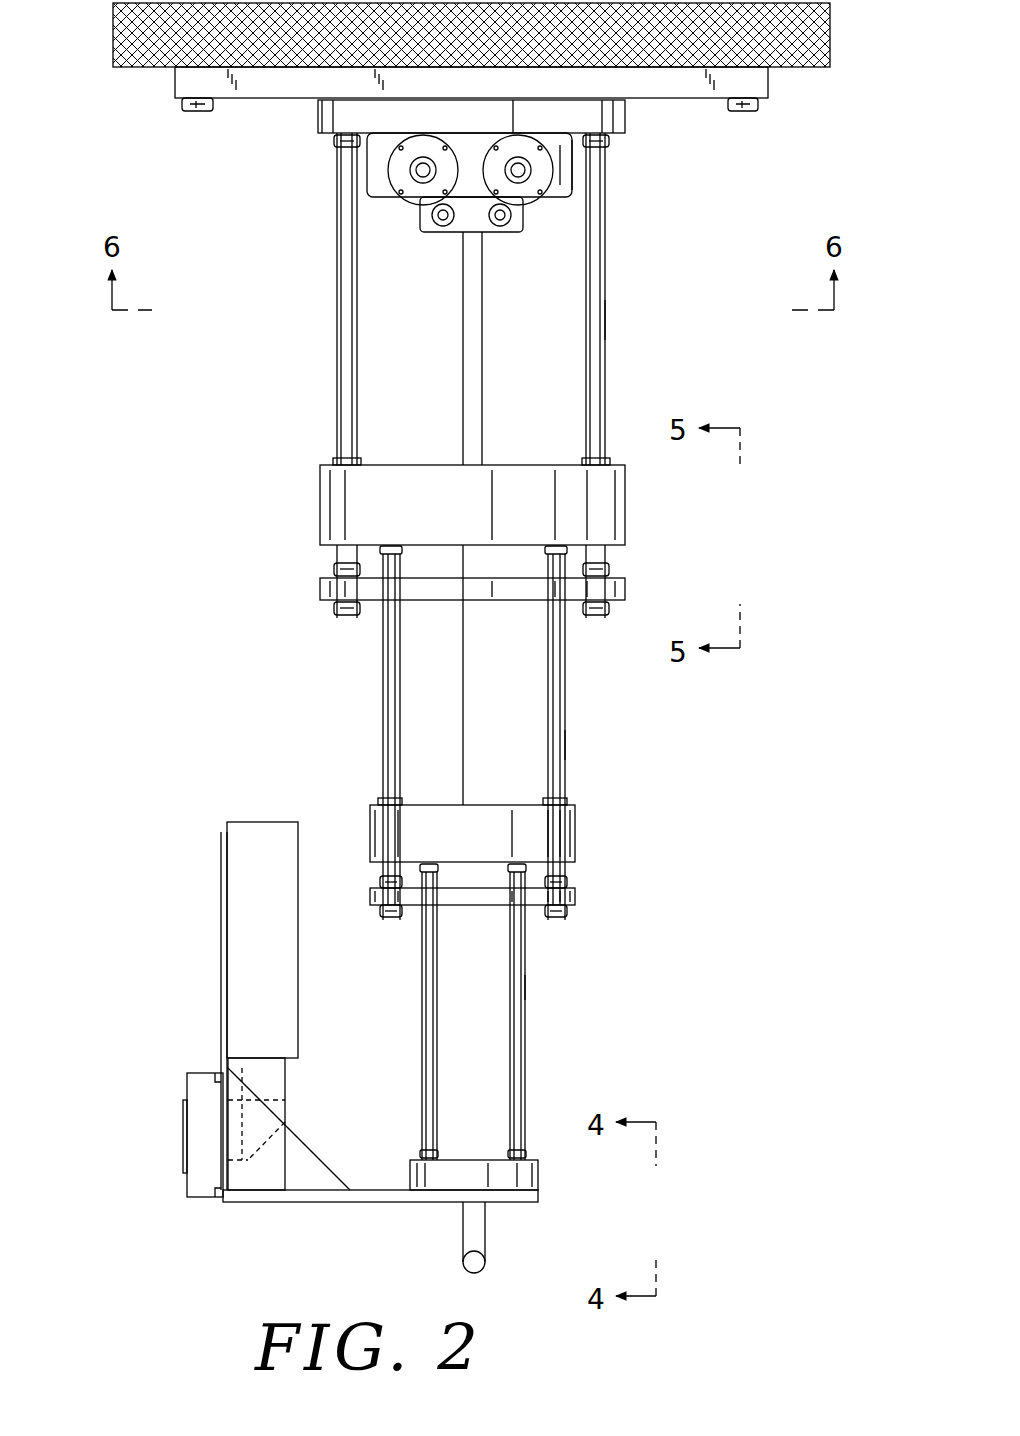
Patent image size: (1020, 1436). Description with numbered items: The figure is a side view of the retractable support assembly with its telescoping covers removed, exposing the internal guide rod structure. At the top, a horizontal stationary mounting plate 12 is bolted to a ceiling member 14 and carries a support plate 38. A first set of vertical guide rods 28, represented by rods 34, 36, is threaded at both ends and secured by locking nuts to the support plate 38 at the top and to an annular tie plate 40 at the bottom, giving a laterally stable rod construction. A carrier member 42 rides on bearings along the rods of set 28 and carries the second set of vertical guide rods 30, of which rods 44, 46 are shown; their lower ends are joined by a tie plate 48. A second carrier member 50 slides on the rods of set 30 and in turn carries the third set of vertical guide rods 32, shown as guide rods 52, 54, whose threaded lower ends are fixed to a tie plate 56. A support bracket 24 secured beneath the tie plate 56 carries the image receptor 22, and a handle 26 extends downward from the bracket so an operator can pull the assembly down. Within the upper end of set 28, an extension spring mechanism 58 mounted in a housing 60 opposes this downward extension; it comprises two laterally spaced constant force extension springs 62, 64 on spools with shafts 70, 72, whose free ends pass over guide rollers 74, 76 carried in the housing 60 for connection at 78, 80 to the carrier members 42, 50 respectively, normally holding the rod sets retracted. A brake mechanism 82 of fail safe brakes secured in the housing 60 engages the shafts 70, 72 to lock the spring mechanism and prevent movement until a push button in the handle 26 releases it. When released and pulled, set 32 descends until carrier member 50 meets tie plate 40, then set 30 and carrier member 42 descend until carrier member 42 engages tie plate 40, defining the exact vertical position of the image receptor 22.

The mounting plate 12 is at (768, 88).
The ceiling member 14 is at (831, 33).
The image receptor 22 is at (218, 934).
The support bracket 24 is at (322, 1203).
The handle 26 is at (492, 1263).
The first set of vertical guide rods 28 is at (608, 326).
The second set of vertical guide rods 30 is at (568, 742).
The third set of vertical guide rods 32 is at (528, 990).
The vertical guide rod 34 is at (606, 378).
The vertical guide rod 36 is at (358, 376).
The support plate 38 is at (625, 116).
The tie plate 40 is at (625, 594).
The carrier member 42 is at (625, 525).
The vertical guide rod 44 is at (565, 700).
The vertical guide rod 46 is at (383, 700).
The tie plate 48 is at (576, 895).
The carrier member 50 is at (576, 832).
The guide rod 52 is at (526, 1046).
The guide rod 54 is at (422, 1040).
The tie plate 56 is at (538, 1182).
The extension spring mechanism 58 is at (532, 262).
The housing 60 is at (572, 195).
The constant force extension spring 62 is at (548, 170).
The constant force extension spring 64 is at (396, 166).
The shaft 70 is at (520, 158).
The shaft 72 is at (420, 158).
The guide roller 74 is at (503, 227).
The guide roller 76 is at (443, 227).
The spring connection 78 is at (482, 465).
The spring connection 80 is at (464, 805).
The brake mechanism 82 is at (572, 176).